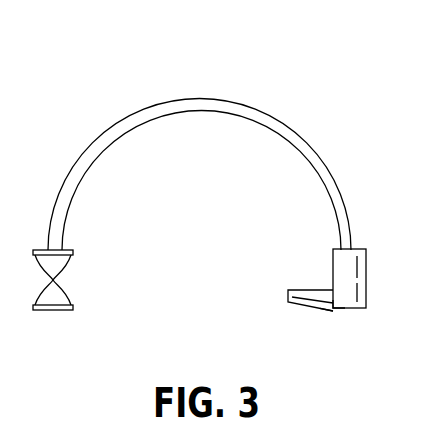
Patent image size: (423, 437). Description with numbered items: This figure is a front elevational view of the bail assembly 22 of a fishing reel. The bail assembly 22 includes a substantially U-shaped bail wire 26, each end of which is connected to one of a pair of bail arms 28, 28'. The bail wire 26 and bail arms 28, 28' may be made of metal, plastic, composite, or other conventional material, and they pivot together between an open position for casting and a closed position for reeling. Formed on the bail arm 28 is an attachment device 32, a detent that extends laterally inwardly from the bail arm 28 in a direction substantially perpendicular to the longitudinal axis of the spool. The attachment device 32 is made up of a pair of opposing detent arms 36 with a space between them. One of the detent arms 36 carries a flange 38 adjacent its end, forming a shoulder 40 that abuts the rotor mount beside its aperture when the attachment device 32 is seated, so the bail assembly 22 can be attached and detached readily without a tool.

The bail assembly 22 is at (312, 90).
The bail wire 26 is at (310, 149).
The bail arm 28 is at (302, 237).
The bail arm 28' is at (92, 256).
The attachment device 32 is at (306, 315).
The detent arms 36 is at (286, 299).
The flange 38 is at (342, 312).
The shoulder 40 is at (321, 315).